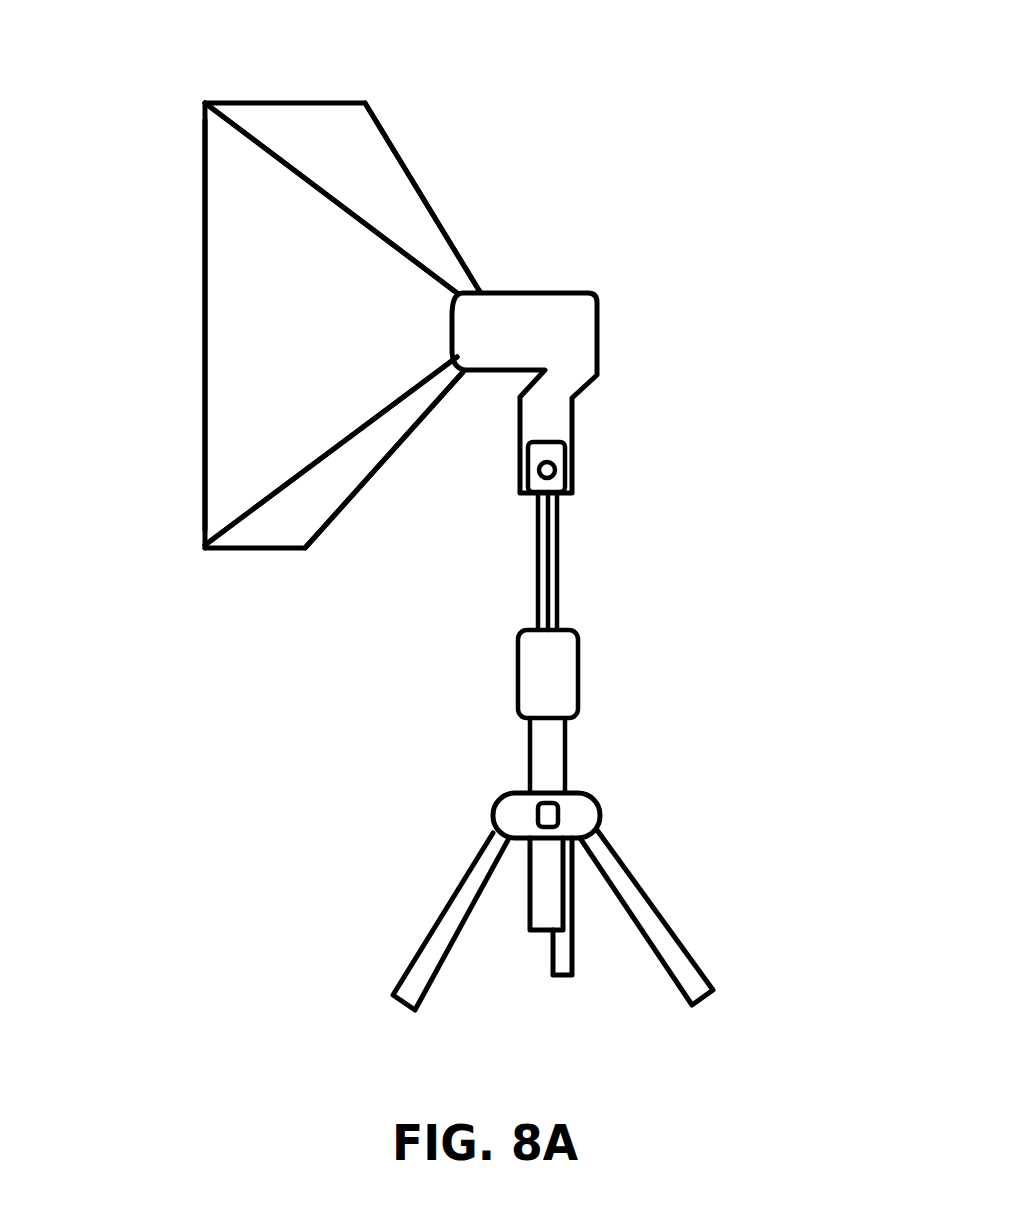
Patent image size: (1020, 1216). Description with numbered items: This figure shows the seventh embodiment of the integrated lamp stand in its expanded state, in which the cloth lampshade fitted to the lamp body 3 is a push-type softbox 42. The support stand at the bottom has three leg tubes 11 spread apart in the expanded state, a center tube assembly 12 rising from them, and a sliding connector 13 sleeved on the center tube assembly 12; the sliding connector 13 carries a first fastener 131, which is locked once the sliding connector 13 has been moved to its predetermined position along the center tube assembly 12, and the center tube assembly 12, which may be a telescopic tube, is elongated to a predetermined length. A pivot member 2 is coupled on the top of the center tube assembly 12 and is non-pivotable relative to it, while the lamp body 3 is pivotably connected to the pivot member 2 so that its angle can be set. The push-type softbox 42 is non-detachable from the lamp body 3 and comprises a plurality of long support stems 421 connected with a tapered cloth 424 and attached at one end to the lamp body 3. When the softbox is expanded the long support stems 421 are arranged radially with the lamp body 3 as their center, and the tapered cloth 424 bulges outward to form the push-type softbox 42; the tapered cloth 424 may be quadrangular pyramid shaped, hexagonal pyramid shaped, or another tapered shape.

The push-type softbox 42 is at (157, 505).
The long support stems 421 is at (392, 140).
The tapered cloth 424 is at (245, 262).
The lamp body 3 is at (597, 340).
The pivot member 2 is at (575, 470).
The center tube assembly 12 is at (565, 735).
The sliding connector 13 is at (493, 813).
The first fastener 131 is at (600, 813).
The leg tubes 11 is at (680, 935).